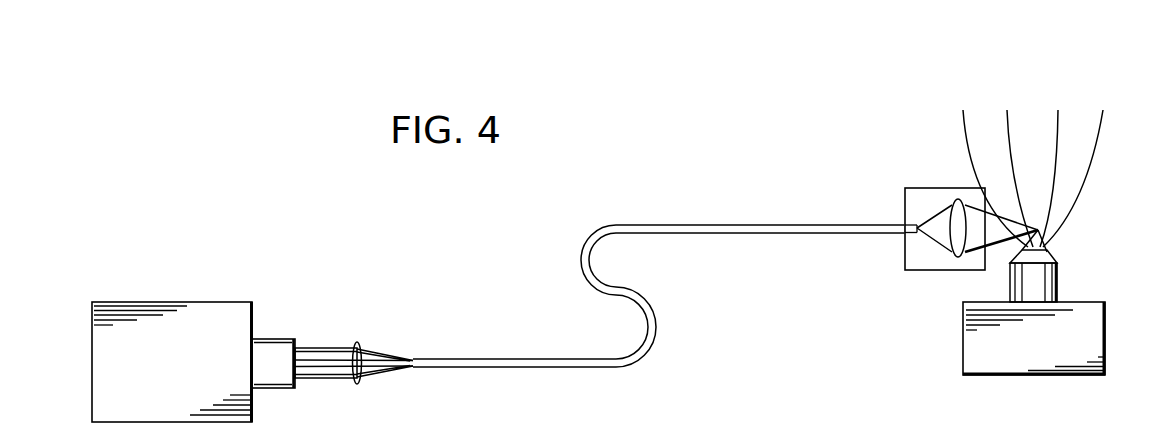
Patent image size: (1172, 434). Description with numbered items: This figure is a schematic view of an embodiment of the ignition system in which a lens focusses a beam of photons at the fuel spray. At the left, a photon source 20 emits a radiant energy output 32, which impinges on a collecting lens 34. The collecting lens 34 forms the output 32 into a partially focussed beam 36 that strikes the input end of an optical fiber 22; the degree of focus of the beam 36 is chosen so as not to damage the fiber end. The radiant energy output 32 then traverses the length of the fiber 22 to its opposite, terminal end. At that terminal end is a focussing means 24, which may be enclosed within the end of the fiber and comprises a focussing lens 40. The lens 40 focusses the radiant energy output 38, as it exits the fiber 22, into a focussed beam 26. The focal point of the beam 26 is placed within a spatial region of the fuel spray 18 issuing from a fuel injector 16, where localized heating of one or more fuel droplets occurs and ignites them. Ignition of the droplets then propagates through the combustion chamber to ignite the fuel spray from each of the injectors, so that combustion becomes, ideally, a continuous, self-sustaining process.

The fuel injector 16 is at (1058, 278).
The fuel spray 18 is at (1078, 193).
The photon source 20 is at (170, 302).
The optical fiber 22 is at (520, 357).
The focussing means 24 is at (905, 205).
The focussed beam 26 is at (1003, 245).
The radiant energy output 32 is at (325, 348).
The collecting lens 34 is at (355, 347).
The partially focussed beam 36 is at (387, 373).
The radiant energy output 38 is at (935, 243).
The focussing lens 40 is at (958, 199).